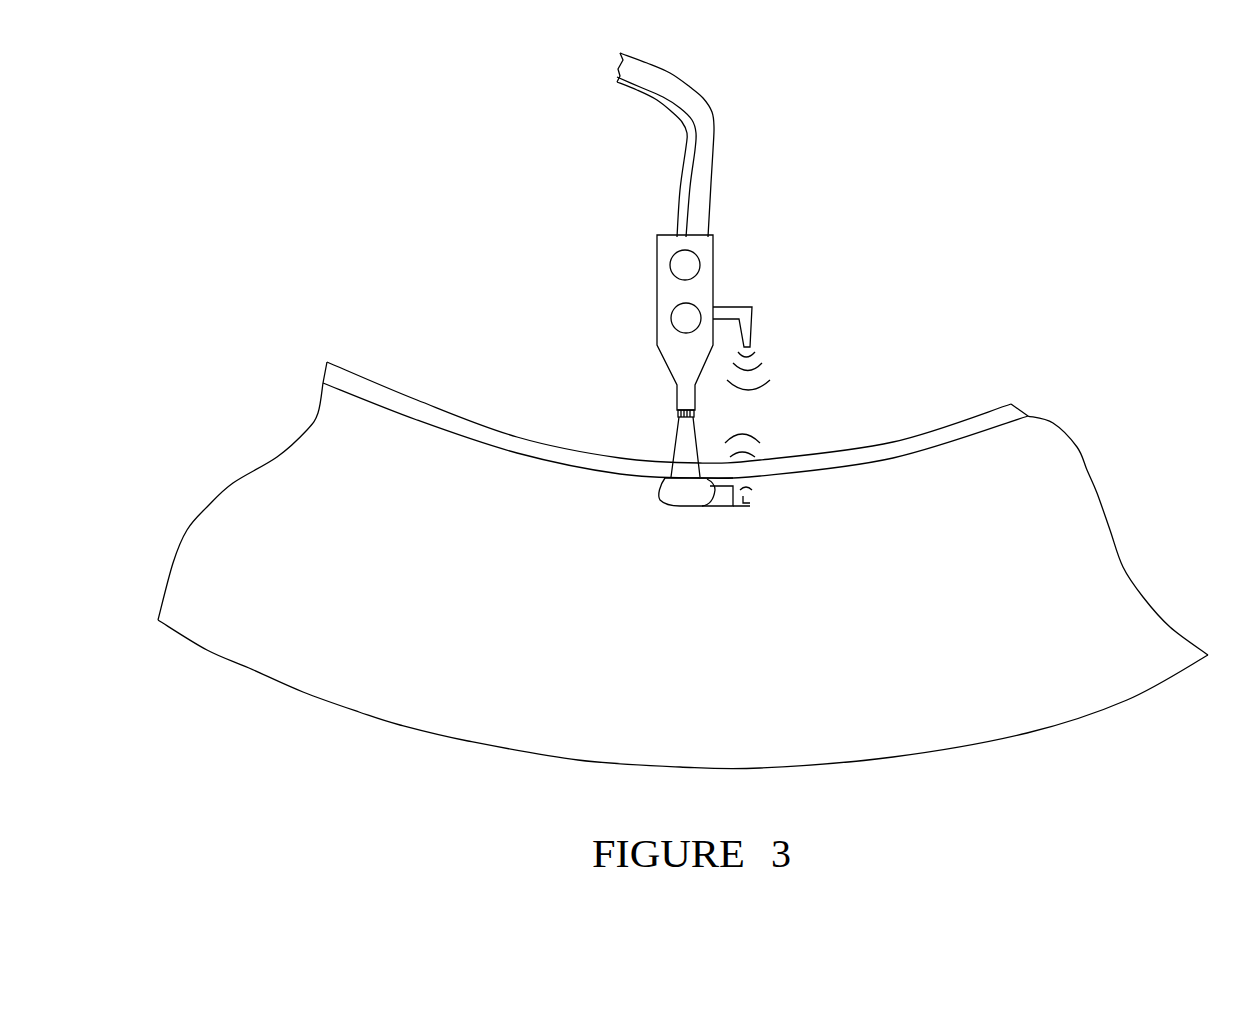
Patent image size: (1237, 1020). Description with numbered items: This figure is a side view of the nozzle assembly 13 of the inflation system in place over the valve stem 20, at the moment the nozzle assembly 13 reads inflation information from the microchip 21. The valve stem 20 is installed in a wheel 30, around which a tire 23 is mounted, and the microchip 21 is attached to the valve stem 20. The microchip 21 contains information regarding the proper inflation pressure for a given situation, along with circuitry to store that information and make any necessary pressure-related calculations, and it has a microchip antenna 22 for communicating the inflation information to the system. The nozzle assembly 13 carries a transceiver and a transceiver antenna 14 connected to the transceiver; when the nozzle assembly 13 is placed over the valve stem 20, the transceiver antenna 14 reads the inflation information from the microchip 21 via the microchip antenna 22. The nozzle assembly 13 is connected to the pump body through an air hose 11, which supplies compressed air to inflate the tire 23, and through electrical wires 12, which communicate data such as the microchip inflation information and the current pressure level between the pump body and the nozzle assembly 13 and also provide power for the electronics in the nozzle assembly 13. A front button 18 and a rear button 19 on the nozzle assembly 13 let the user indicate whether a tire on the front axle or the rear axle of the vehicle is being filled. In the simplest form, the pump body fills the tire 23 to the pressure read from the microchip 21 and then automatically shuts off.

The air hose 11 is at (718, 123).
The electrical wires 12 is at (672, 118).
The nozzle assembly 13 is at (660, 360).
The transceiver antenna 14 is at (738, 304).
The front button 18 is at (670, 263).
The rear button 19 is at (671, 318).
The valve stem 20 is at (670, 445).
The microchip 21 is at (712, 512).
The microchip antenna 22 is at (745, 508).
The tire 23 is at (373, 645).
The wheel 30 is at (433, 420).